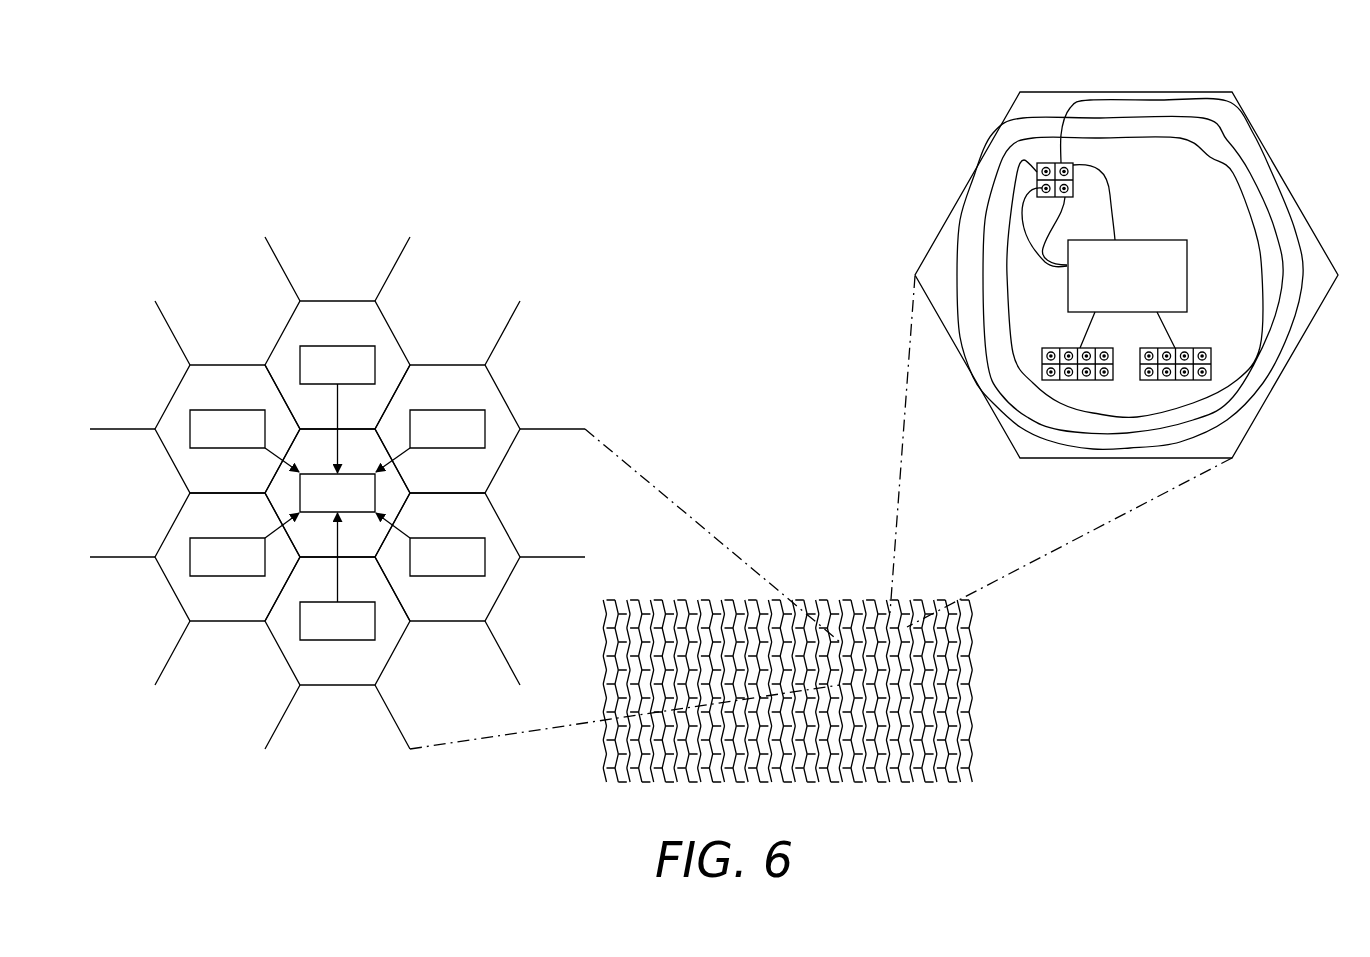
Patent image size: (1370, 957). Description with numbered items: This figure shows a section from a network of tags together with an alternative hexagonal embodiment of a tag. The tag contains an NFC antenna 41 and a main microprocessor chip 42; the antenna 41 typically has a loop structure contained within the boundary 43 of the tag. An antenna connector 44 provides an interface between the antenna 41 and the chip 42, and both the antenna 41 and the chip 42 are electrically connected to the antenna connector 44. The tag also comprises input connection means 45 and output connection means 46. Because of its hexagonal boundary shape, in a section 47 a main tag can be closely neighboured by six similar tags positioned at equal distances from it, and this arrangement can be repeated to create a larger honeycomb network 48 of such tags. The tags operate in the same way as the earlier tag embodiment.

The NFC antenna 41 is at (1057, 117).
The main microprocessor chip 42 is at (1170, 240).
The boundary 43 is at (935, 240).
The antenna connector 44 is at (1037, 168).
The input connection means 45 is at (1070, 380).
The output connection means 46 is at (1211, 370).
The section 47 is at (563, 353).
The honeycomb network 48 is at (990, 757).